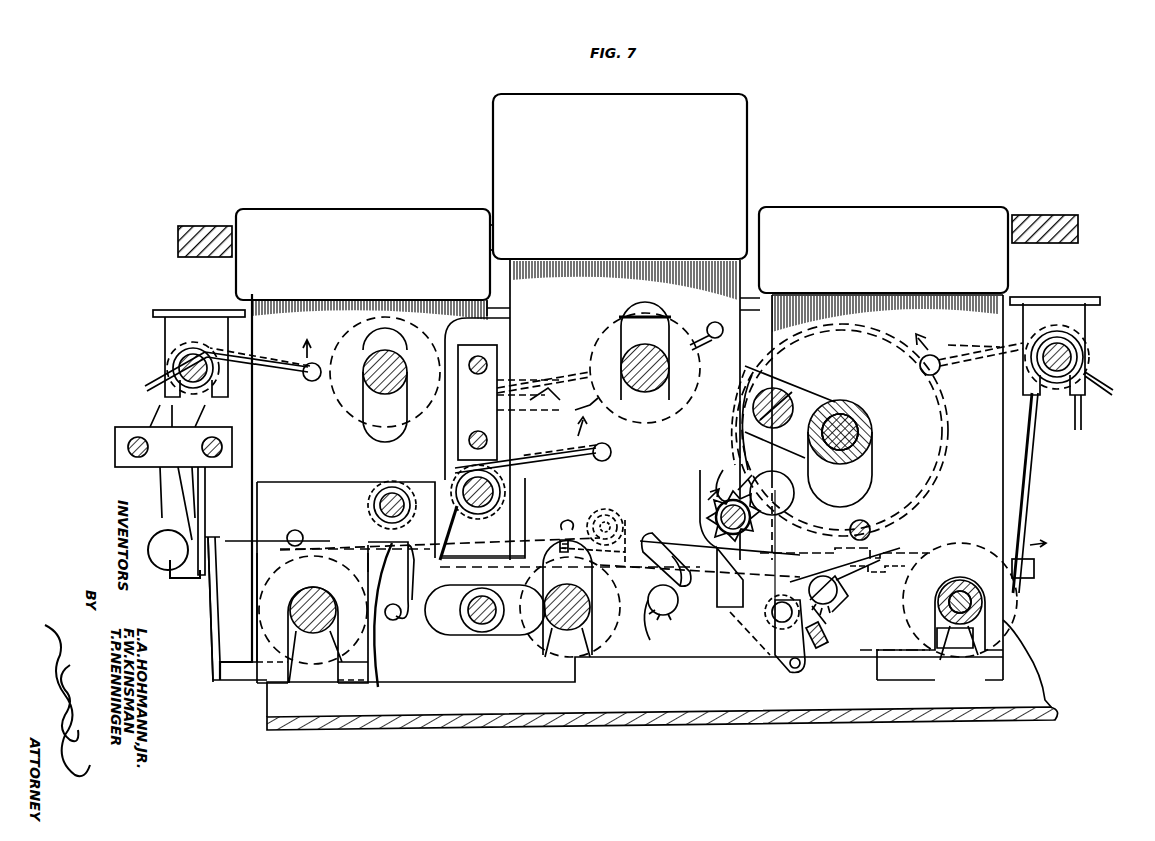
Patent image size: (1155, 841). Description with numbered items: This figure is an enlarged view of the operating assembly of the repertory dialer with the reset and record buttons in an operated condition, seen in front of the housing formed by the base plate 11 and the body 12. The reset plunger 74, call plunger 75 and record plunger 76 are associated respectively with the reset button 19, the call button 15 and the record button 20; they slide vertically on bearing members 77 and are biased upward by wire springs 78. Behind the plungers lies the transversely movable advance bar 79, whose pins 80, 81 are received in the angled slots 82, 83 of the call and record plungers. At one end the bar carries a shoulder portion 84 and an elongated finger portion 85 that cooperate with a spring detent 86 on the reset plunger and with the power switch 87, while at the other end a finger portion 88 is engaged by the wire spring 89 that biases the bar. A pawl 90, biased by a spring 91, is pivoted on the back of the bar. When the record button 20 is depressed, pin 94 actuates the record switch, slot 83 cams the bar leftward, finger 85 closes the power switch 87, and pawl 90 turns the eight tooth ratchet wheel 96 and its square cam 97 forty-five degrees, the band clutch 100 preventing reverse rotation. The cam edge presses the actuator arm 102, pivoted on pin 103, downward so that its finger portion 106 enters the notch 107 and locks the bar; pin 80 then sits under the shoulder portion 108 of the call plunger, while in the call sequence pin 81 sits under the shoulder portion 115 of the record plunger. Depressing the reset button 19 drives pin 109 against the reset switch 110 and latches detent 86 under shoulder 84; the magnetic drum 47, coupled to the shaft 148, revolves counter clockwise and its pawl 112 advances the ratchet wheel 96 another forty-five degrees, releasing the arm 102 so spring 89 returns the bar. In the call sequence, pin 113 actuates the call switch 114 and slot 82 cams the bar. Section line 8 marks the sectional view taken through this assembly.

The base plate 11 is at (632, 724).
The body 12 is at (1064, 215).
The call button 15 is at (707, 100).
The reset button 19 is at (388, 222).
The record button 20 is at (874, 218).
The magnetic drum 47 is at (925, 502).
The reset plunger 74 is at (340, 318).
The call plunger 75 is at (598, 278).
The record plunger 76 is at (866, 320).
The bearing members 77 is at (400, 392).
The wire springs 78 is at (306, 362).
The advance bar 79 is at (488, 660).
The pin 80 is at (668, 605).
The pin 81 is at (832, 596).
The angled slot 82 is at (673, 570).
The angled slot 83 is at (850, 603).
The shoulder portion 84 is at (381, 660).
The elongated finger portion 85 is at (239, 686).
The spring detent 86 is at (405, 612).
The power switch 87 is at (192, 580).
The finger portion 88 is at (1034, 568).
The wire spring 89 is at (1024, 518).
The pawl 90 is at (730, 633).
The spring 91 is at (758, 643).
The pin 94 is at (865, 522).
The ratchet wheel 96 is at (716, 512).
The square cam 97 is at (728, 495).
The band clutch 100 is at (779, 495).
The actuator arm 102 is at (690, 545).
The pin 103 is at (603, 516).
The finger portion 106 is at (845, 552).
The notch 107 is at (880, 572).
The shoulder portion 108 is at (659, 643).
The pin 109 is at (295, 530).
The reset switch 110 is at (340, 540).
The pawl 112 is at (768, 378).
The pin 113 is at (714, 322).
The call switch 114 is at (545, 372).
The shoulder portion 115 is at (822, 648).
The shaft 148 is at (846, 424).
The section line 8 is at (1050, 473).